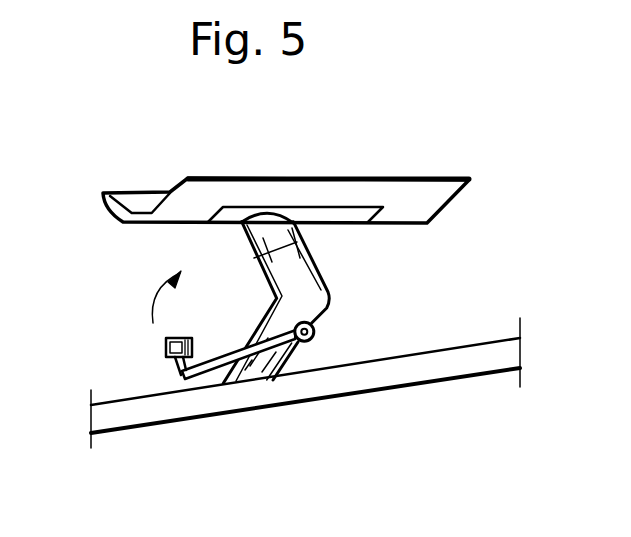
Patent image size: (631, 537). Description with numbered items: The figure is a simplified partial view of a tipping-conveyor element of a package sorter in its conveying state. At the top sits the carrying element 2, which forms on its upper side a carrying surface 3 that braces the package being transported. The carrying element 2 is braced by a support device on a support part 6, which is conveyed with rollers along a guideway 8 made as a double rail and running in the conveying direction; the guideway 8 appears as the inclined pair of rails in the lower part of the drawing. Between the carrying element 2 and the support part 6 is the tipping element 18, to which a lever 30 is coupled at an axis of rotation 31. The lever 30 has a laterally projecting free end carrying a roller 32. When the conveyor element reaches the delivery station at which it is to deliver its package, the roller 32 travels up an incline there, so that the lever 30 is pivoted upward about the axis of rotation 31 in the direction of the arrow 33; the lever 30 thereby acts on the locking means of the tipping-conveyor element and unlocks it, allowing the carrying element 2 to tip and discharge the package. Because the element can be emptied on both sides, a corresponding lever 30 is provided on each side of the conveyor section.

The carrying element 2 is at (277, 228).
The carrying surface 3 is at (135, 203).
The support part 6 is at (265, 376).
The guideway 8 is at (152, 416).
The tipping element 18 is at (300, 282).
The lever 30 is at (205, 369).
The axis of rotation 31 is at (327, 347).
The roller 32 is at (168, 348).
The arrow 33 is at (157, 302).